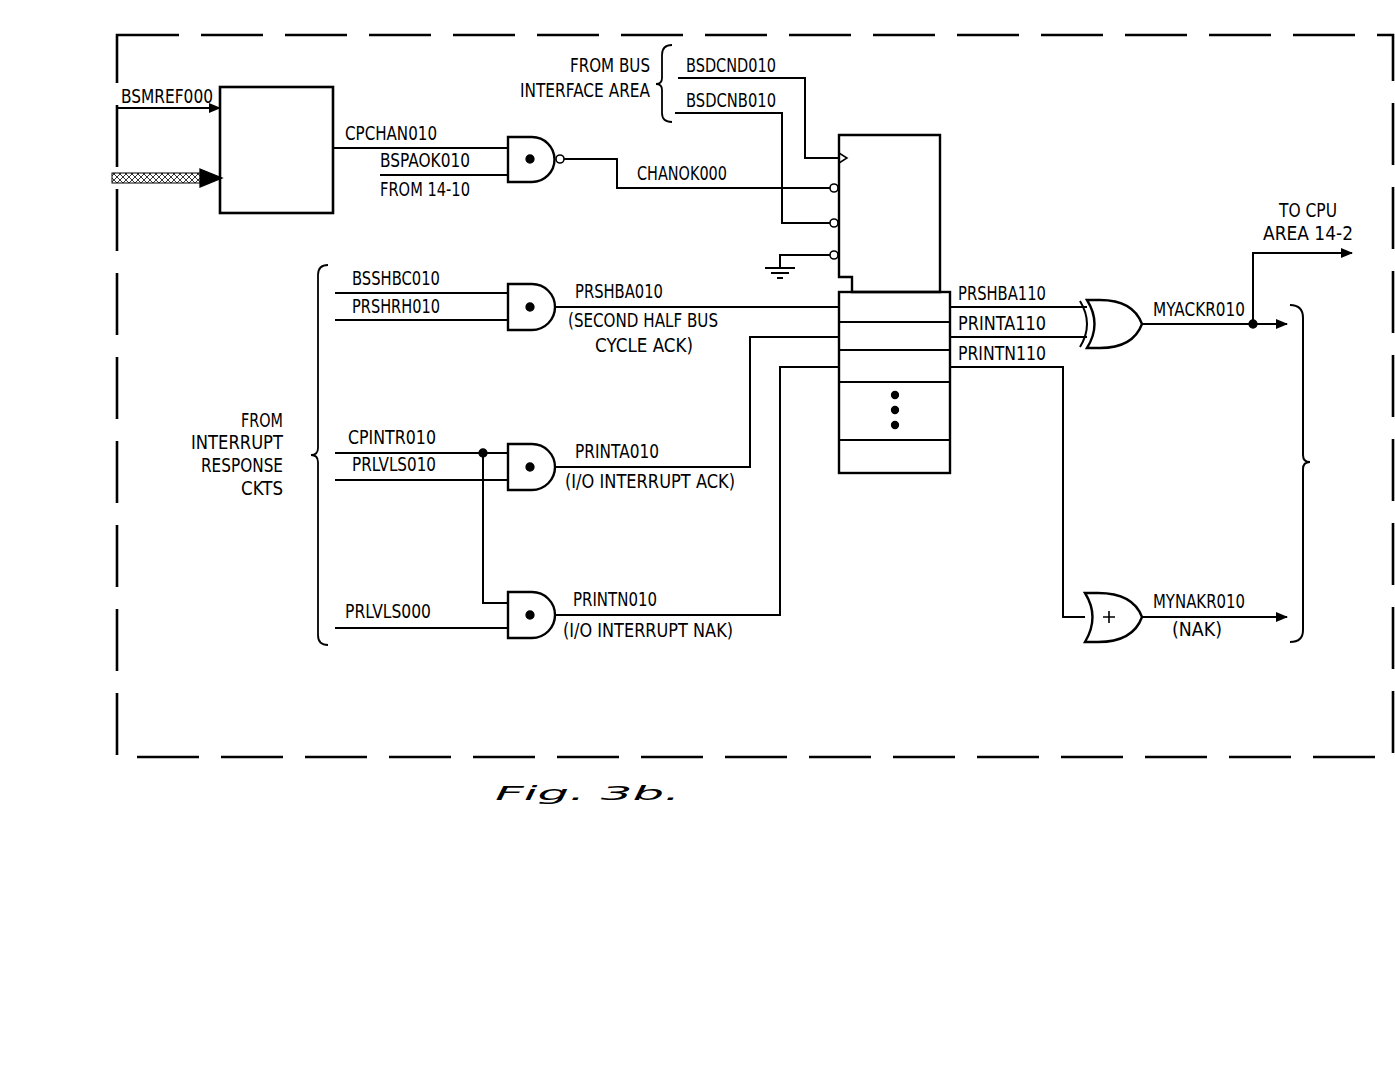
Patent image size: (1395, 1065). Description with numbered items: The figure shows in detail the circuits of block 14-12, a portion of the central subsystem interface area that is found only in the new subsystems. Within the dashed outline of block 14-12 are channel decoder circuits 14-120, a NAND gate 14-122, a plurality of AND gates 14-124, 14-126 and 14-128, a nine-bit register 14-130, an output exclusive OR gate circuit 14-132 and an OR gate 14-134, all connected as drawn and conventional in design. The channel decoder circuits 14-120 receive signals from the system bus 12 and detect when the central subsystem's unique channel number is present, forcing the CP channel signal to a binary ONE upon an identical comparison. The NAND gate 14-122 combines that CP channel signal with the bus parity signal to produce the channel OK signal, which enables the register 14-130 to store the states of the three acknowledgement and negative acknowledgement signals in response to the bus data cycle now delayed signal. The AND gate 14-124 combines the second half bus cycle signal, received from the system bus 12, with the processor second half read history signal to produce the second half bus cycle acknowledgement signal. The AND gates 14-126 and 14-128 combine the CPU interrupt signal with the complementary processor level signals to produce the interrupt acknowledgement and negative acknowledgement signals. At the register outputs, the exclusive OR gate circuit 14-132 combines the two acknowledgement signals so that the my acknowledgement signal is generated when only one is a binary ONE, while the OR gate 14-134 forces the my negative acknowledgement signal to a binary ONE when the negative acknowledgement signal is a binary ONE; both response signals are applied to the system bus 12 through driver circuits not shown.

The block 14-12 is at (926, 749).
The system bus 12 is at (715, 398).
The channel decoder circuits 14-120 is at (335, 101).
The NAND gate 14-122 is at (536, 182).
The AND gate 14-124 is at (532, 331).
The AND gate 14-126 is at (530, 491).
The AND gate 14-128 is at (527, 640).
The 9-bit register 14-130 is at (942, 153).
The output exclusive OR gate circuit 14-132 is at (1118, 303).
The OR gate 14-134 is at (1113, 593).